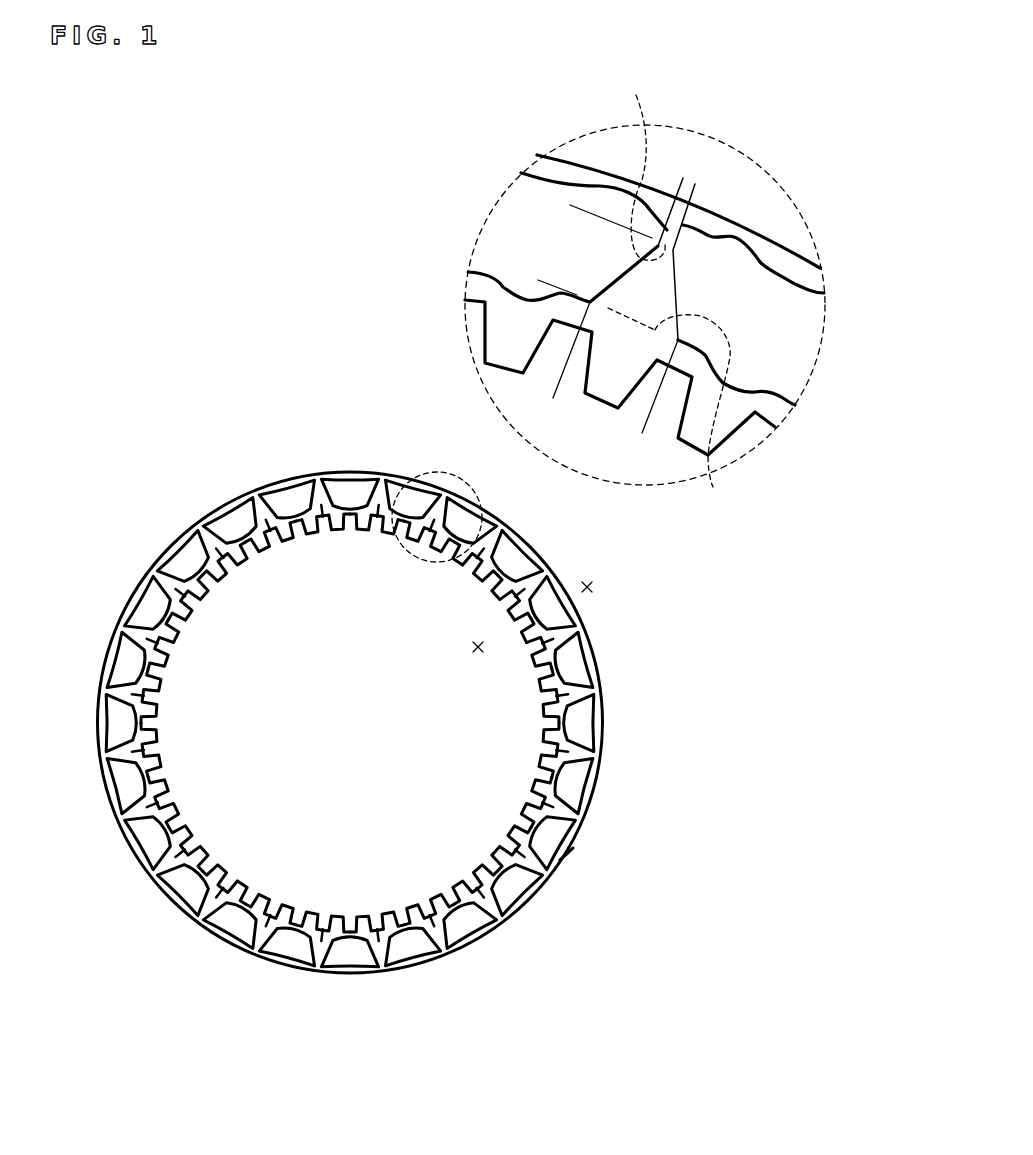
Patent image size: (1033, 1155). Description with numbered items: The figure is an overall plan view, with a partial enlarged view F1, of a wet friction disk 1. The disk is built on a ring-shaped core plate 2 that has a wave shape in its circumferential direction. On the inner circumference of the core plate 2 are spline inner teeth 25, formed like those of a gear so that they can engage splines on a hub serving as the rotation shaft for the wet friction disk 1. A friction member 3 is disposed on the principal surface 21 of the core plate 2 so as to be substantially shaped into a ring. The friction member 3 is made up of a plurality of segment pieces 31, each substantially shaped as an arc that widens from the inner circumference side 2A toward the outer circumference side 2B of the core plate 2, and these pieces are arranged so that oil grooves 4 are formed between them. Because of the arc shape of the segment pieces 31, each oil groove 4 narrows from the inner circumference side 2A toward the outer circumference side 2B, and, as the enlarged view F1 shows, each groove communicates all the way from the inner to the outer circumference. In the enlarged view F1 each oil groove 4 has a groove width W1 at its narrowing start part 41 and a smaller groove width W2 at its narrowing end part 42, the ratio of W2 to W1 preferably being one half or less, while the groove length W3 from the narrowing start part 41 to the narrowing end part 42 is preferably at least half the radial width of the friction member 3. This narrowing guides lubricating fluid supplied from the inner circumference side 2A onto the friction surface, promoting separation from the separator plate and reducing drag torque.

The wet friction disk 1 is at (469, 554).
The core plate 2 is at (603, 698).
The inner circumference side 2A is at (480, 647).
The outer circumference side 2B is at (588, 586).
The principal surface 21 is at (573, 848).
The spline inner teeth 25 is at (196, 605).
The friction member 3 is at (472, 554).
The segment pieces 31 is at (520, 892).
The oil grooves 4 is at (482, 893).
The narrowing start part 41 is at (681, 412).
The narrowing end part 42 is at (632, 168).
The enlarged view F1 is at (462, 478).
The groove width at narrowing start part W1 is at (642, 433).
The groove width at narrowing end part W2 is at (730, 198).
The groove length W3 is at (583, 212).